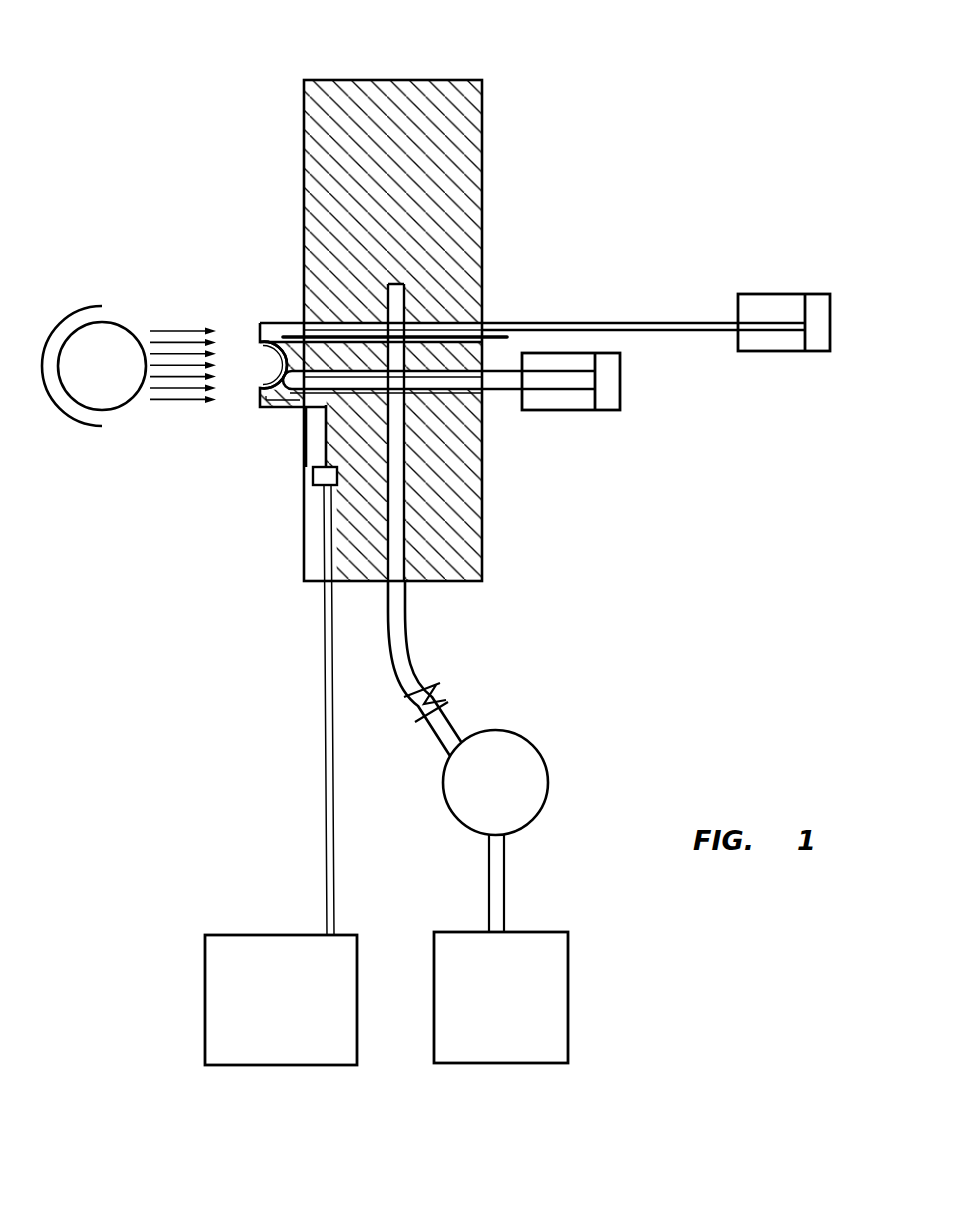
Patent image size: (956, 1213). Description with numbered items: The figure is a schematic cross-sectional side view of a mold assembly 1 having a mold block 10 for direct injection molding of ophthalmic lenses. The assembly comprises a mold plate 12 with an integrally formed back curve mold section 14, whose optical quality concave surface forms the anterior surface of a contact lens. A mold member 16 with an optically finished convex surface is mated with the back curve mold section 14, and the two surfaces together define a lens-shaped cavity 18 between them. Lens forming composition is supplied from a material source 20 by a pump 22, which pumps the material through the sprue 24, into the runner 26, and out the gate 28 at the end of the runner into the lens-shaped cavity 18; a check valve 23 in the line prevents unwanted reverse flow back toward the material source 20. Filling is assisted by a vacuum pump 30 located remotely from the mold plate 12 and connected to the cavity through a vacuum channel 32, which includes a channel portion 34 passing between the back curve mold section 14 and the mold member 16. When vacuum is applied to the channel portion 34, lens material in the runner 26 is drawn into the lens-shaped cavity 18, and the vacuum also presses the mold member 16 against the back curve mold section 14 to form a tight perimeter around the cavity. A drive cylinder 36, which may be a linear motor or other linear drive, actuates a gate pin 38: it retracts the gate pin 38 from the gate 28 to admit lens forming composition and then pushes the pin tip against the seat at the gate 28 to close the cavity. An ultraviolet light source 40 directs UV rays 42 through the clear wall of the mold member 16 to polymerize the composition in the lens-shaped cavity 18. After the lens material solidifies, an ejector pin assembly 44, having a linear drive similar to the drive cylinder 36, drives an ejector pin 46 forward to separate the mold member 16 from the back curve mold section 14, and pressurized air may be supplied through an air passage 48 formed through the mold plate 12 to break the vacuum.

The mold assembly 1 is at (505, 97).
The mold block 10 is at (668, 128).
The mold plate 12 is at (304, 100).
The back curve mold section 14 is at (287, 322).
The mold member 16 is at (261, 409).
The lens-shaped cavity 18 is at (282, 364).
The material source 20 is at (568, 1005).
The pump 22 is at (548, 768).
The check valve 23 is at (440, 693).
The sprue 24 is at (405, 550).
The runner 26 is at (306, 440).
The gate 28 is at (288, 398).
The vacuum pump 30 is at (253, 935).
The vacuum channel 32 is at (324, 656).
The channel portion 34 is at (323, 397).
The drive cylinder 36 is at (608, 390).
The gate pin 38 is at (503, 391).
The ultraviolet light source 40 is at (120, 408).
The UV rays 42 is at (173, 331).
The ejector pin assembly 44 is at (815, 294).
The ejector pin 46 is at (668, 321).
The air passage 48 is at (508, 337).